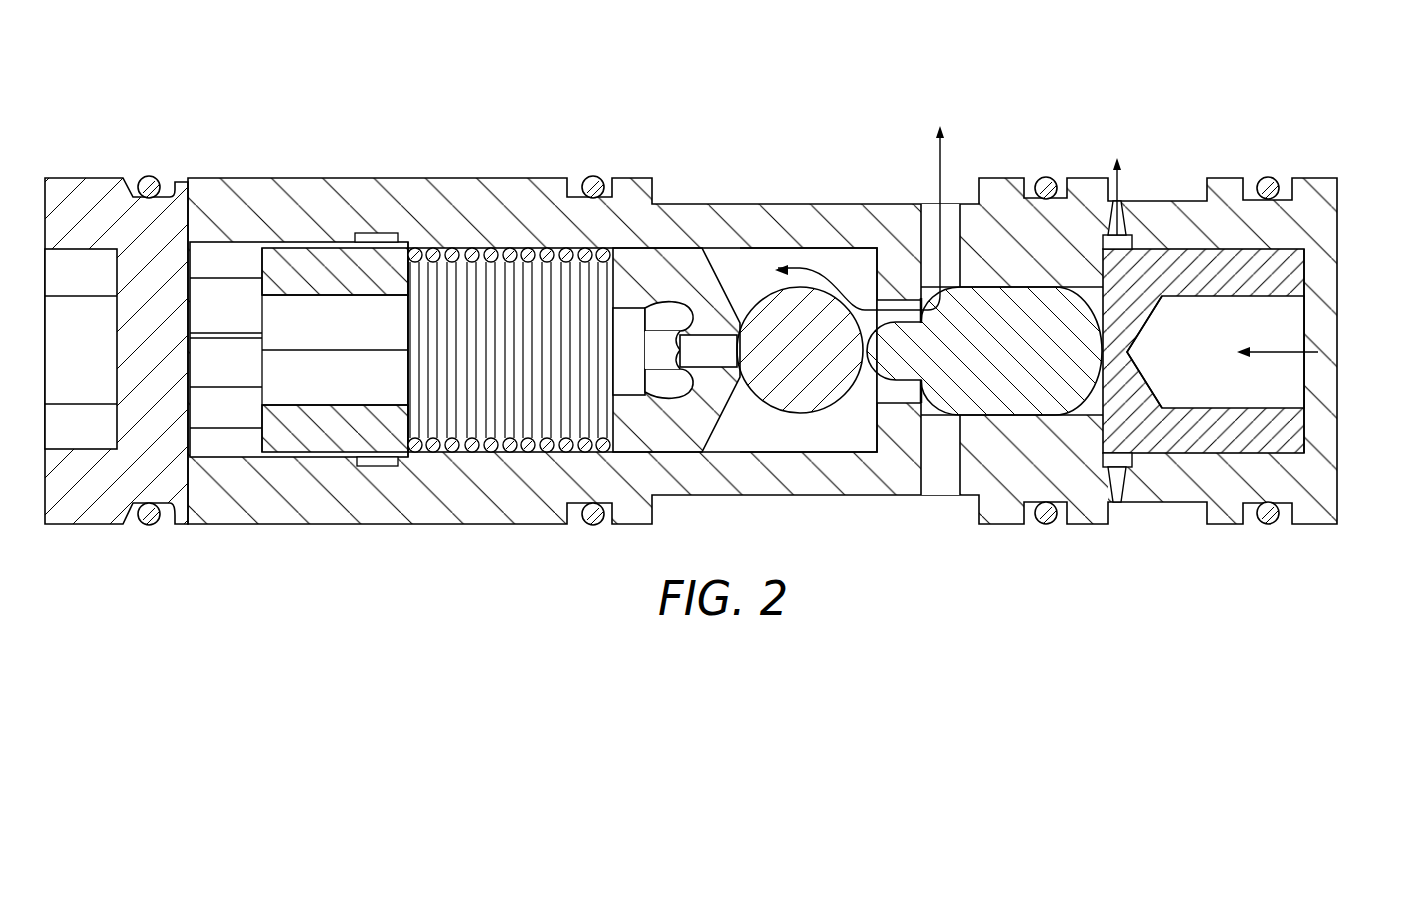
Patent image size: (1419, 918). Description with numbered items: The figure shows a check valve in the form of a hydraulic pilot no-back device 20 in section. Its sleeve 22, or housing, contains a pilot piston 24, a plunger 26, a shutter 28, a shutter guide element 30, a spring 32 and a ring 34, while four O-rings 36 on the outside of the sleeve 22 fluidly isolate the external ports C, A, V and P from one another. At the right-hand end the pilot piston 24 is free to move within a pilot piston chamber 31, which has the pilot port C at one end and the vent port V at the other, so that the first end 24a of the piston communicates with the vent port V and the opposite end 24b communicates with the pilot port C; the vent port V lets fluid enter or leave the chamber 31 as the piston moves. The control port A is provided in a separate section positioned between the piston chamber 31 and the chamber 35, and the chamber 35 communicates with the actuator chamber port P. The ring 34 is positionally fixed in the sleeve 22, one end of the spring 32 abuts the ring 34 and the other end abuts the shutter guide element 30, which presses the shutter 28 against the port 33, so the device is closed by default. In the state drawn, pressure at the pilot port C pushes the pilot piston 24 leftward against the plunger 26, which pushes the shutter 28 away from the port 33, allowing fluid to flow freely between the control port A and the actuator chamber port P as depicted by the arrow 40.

The hydraulic pilot no-back device 20 is at (270, 73).
The sleeve 22 is at (407, 190).
The pilot piston 24 is at (1250, 356).
The first end of the pilot piston 24a is at (1104, 268).
The second end of the pilot piston 24b is at (1306, 276).
The plunger 26 is at (1025, 385).
The shutter 28 is at (800, 300).
The shutter guide element 30 is at (692, 265).
The pilot piston chamber 31 is at (1226, 393).
The spring 32 is at (510, 445).
The port 33 is at (901, 392).
The ring 34 is at (327, 440).
The chamber 35 is at (800, 435).
The O-rings 36 is at (149, 175).
The arrow 40 is at (930, 152).